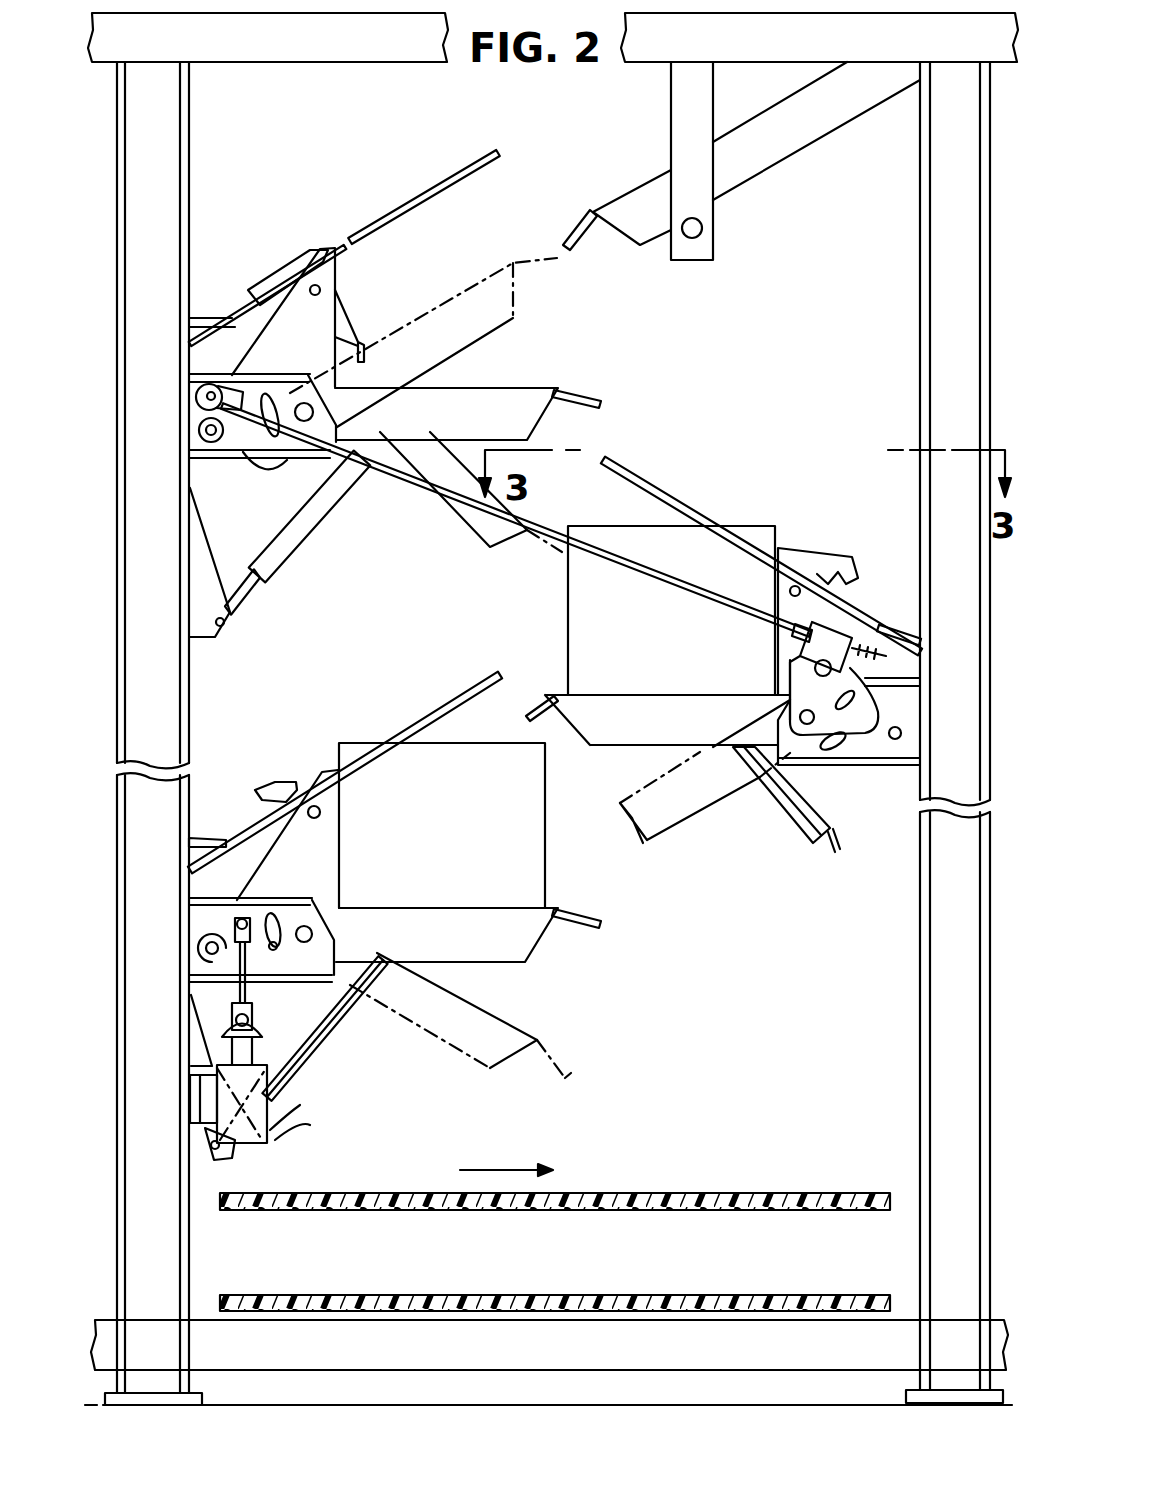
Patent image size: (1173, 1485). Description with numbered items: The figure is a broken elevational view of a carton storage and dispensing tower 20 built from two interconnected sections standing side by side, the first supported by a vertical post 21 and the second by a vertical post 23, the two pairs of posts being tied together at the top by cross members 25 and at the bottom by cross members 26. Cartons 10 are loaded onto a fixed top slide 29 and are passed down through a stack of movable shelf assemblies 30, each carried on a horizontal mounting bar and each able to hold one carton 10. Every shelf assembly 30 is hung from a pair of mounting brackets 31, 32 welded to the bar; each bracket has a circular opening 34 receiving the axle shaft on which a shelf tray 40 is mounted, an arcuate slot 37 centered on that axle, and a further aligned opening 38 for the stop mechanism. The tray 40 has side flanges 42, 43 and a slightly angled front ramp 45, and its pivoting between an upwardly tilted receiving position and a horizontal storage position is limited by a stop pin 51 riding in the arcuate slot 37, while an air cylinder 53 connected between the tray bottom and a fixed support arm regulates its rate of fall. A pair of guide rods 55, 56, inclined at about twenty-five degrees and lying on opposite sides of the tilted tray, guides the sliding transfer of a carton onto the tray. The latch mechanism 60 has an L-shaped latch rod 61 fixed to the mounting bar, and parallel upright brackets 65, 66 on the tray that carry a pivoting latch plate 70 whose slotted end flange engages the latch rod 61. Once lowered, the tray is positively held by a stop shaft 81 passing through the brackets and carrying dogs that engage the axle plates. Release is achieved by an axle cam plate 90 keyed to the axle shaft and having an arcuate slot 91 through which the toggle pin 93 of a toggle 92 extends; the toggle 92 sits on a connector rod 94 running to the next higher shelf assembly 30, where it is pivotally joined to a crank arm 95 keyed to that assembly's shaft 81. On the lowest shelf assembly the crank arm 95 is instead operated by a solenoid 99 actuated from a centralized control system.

The carton 10 is at (557, 717).
The tower 20 is at (551, 709).
The vertical post 21 is at (189, 107).
The vertical post 23 is at (920, 320).
The cross member 25 is at (345, 64).
The cross member 26 is at (470, 1371).
The fixed top slide 29 is at (671, 93).
The shelf assembly 30 is at (348, 203).
The mounting bracket 31 is at (285, 478).
The mounting bracket 32 is at (897, 767).
The circular opening 34 is at (318, 408).
The arcuate slot 37 is at (842, 748).
The aligned opening 38 is at (893, 740).
The shelf tray 40 is at (487, 378).
The side flange 42 is at (392, 520).
The side flange 43 is at (607, 747).
The front ramp 45 is at (575, 392).
The stop pin 51 is at (270, 914).
The air cylinder 53 is at (280, 553).
The guide rod 55 is at (445, 183).
The guide rod 56 is at (668, 500).
The latch mechanism 60 is at (337, 292).
The latch rod 61 is at (203, 315).
The upright bracket 65 is at (285, 574).
The upright bracket 66 is at (785, 638).
The latch plate 70 is at (345, 330).
The shaft 81 is at (197, 400).
The axle cam plate 90 is at (873, 713).
The arcuate slot 91 is at (814, 718).
The toggle 92 is at (790, 674).
The toggle pin 93 is at (815, 662).
The connector rod 94 is at (470, 505).
The crank arm 95 is at (200, 438).
The solenoid 99 is at (227, 1078).